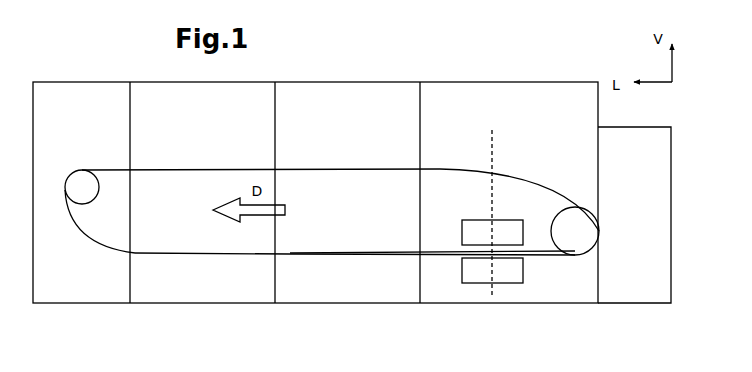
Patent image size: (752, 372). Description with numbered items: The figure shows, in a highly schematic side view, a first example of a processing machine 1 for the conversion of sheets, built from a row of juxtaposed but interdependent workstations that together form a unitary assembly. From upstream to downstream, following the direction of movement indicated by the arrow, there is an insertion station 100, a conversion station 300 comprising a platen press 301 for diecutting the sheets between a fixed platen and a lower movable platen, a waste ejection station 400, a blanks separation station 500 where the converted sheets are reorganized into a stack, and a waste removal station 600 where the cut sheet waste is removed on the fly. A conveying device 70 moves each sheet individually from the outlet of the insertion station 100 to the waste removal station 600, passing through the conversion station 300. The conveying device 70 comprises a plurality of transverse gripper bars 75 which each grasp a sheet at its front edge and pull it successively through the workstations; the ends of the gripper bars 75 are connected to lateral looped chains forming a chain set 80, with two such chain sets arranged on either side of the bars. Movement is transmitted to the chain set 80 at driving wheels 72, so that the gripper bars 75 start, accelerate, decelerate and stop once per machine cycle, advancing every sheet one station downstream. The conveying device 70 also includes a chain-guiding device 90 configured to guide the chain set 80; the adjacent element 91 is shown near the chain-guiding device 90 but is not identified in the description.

The processing machine 1 is at (531, 52).
The conveying device 70 is at (476, 129).
The driving wheels 72 is at (552, 231).
The gripper bars 75 is at (77, 163).
The chain set 80 is at (175, 165).
The chain-guiding device 90 is at (64, 159).
The return roller 91 is at (66, 180).
The insertion station 100 is at (620, 305).
The conversion station 300 is at (503, 305).
The platen press 301 is at (470, 272).
The waste ejection station 400 is at (335, 305).
The blanks separation station 500 is at (210, 305).
The waste removal station 600 is at (85, 305).